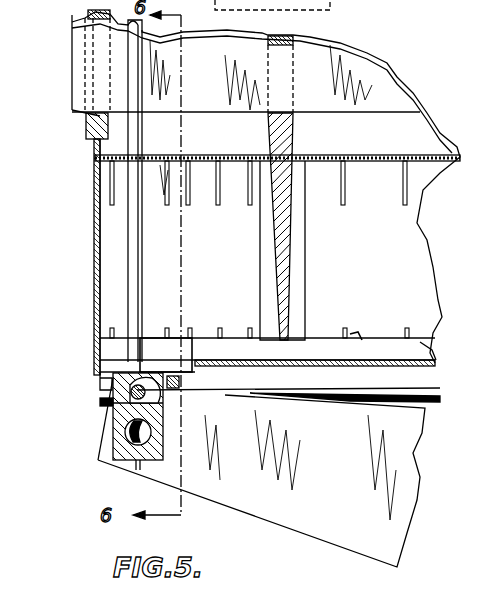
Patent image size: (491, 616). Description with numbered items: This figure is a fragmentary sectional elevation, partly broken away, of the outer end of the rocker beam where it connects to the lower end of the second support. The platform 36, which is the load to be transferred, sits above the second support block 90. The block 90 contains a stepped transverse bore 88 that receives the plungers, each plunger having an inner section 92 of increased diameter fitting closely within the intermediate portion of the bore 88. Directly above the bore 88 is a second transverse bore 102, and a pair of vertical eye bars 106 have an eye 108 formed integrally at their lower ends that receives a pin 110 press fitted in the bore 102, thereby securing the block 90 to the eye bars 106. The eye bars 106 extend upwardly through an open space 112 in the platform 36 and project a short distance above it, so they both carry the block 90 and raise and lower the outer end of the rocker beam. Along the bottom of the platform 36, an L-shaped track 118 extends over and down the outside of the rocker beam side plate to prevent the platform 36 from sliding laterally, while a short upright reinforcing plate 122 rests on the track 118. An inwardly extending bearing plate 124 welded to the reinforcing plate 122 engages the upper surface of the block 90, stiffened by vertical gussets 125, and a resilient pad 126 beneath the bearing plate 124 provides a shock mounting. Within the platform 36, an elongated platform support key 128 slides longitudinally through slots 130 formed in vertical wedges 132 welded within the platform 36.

The platform 36 is at (92, 234).
The transverse bore 88 is at (150, 432).
The second support block 90 is at (120, 446).
The section of increased diameter 92 is at (118, 436).
The second transverse bore 102 is at (100, 402).
The eye bar 106 is at (130, 263).
The eye 108 is at (170, 385).
The pin 110 is at (160, 398).
The open space 112 is at (96, 291).
The L-shaped track 118 is at (320, 396).
The reinforcing plate 122 is at (425, 350).
The bearing plate 124 is at (105, 362).
The vertical gusset 125 is at (352, 345).
The resilient pad 126 is at (102, 386).
The platform support key 128 is at (370, 68).
The slot 130 is at (80, 110).
The vertical wedge 132 is at (88, 123).